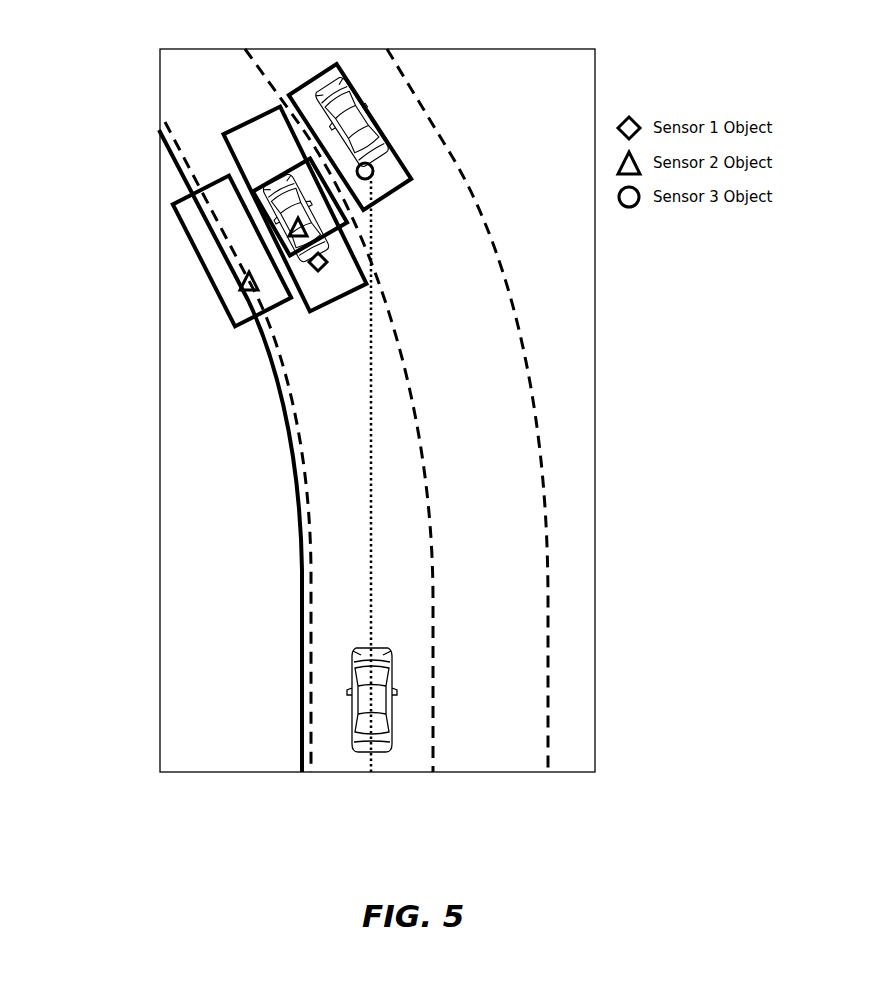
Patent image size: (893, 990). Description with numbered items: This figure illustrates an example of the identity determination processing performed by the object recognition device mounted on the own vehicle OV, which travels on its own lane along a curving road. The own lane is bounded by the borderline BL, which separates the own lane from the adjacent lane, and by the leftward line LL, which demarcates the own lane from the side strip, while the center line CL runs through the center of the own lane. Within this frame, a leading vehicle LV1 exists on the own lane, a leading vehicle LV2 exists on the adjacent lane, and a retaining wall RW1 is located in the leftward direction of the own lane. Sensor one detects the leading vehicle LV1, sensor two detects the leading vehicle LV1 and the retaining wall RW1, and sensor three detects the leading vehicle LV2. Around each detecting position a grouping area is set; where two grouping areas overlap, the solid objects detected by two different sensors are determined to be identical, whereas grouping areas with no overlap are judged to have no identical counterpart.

The leading vehicle LV2 is at (364, 86).
The leading vehicle LV1 is at (305, 300).
The own vehicle OV is at (357, 705).
The retaining wall RW1 is at (273, 392).
The leftward line LL is at (310, 712).
The borderline BL is at (433, 712).
The center line CL is at (370, 567).